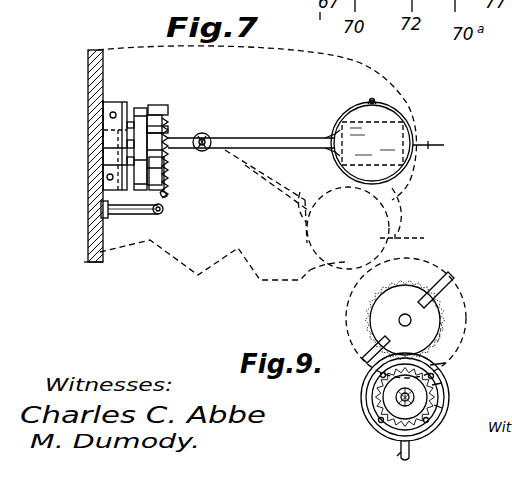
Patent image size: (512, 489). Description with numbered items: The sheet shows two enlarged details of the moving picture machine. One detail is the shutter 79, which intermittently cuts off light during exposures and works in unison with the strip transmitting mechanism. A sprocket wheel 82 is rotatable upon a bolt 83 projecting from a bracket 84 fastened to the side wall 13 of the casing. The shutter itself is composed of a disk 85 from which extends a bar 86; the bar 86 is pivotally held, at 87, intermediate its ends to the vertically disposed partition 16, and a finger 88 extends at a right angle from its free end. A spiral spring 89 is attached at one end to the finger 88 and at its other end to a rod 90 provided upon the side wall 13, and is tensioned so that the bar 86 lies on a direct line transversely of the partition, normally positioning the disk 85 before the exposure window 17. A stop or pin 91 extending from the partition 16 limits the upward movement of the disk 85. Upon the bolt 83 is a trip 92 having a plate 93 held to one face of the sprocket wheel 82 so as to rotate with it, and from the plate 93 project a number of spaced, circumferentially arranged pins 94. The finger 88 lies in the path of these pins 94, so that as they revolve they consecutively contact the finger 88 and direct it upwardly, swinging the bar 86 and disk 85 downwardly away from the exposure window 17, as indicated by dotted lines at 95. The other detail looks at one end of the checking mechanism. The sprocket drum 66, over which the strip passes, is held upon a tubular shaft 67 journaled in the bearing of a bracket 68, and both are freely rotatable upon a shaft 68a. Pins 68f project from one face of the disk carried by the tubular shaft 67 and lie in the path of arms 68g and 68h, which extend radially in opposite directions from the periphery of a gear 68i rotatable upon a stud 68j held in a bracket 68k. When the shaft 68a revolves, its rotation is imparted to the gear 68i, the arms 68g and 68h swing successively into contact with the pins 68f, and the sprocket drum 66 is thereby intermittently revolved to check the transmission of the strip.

In FIG. 7, the side wall 13 is at (90, 156).
In FIG. 7, the partition 16 is at (240, 262).
In FIG. 7, the exposure window 17 is at (412, 192).
In FIG. 7, the shutter 79 is at (340, 118).
In FIG. 7, the sprocket wheel 82 is at (122, 168).
In FIG. 7, the bolt 83 is at (92, 130).
In FIG. 7, the bracket 84 is at (112, 108).
In FIG. 7, the disk 85 is at (425, 194).
In FIG. 7, the bar 86 is at (264, 137).
In FIG. 7, the pivot 87 is at (206, 136).
In FIG. 7, the finger 88 is at (170, 150).
In FIG. 7, the spiral spring 89 is at (168, 198).
In FIG. 7, the rod 90 is at (127, 214).
In FIG. 7, the stop pin 91 is at (374, 98).
In FIG. 7, the trip 92 is at (139, 108).
In FIG. 7, the plate 93 is at (152, 114).
In FIG. 7, the pins 94 is at (169, 112).
In FIG. 7, the dotted-line position 95 is at (308, 272).
In FIG. 9, the sprocket drum 66 is at (418, 428).
In FIG. 9, the tubular shaft 67 is at (396, 396).
In FIG. 9, the bracket 68 is at (368, 408).
In FIG. 9, the shaft 68a is at (395, 416).
In FIG. 9, the pins 68f is at (442, 383).
In FIG. 9, the arm 68g is at (378, 347).
In FIG. 9, the arm 68h is at (450, 274).
In FIG. 9, the gear 68i is at (428, 328).
In FIG. 9, the stud 68j is at (411, 318).
In FIG. 9, the bracket 68k is at (445, 363).